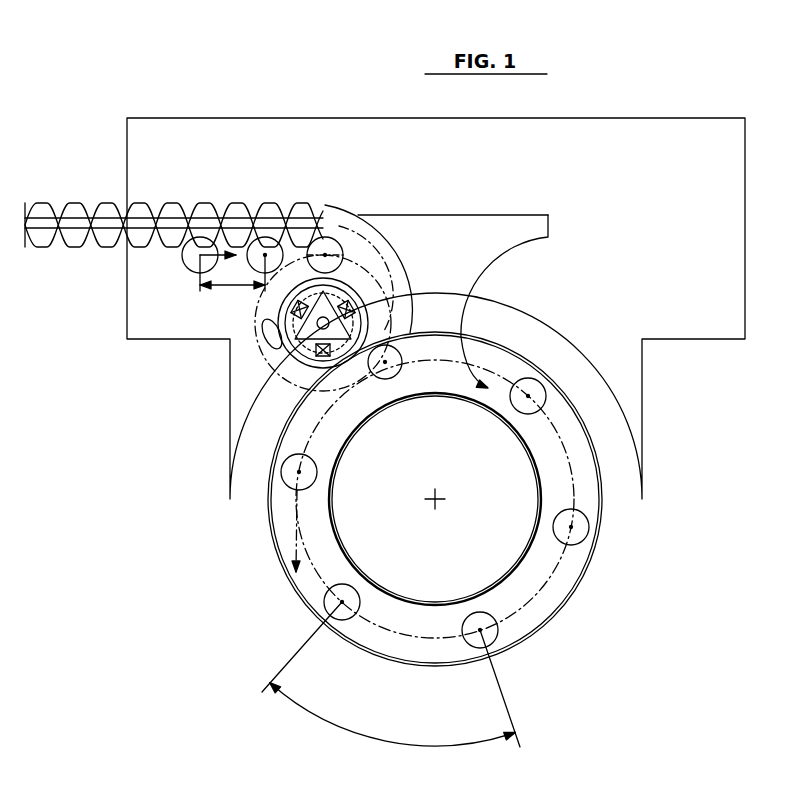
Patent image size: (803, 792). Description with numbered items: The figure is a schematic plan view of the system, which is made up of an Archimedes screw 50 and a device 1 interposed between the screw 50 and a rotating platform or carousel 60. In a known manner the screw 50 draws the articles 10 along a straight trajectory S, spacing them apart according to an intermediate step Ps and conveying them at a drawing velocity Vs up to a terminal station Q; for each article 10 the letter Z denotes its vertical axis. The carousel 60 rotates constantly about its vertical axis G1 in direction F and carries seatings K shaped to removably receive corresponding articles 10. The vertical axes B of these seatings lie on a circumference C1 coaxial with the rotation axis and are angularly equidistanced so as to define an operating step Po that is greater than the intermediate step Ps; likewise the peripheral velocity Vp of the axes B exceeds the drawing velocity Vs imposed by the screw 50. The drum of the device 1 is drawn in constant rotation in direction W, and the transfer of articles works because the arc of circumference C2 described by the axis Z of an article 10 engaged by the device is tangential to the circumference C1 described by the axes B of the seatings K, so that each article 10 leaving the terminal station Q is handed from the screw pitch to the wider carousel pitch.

The device 1 is at (252, 360).
The Archimedes screw 50 is at (249, 186).
The straight trajectory S is at (148, 254).
The axis of the article Z is at (265, 255).
The drawing velocity Vs is at (230, 250).
The intermediate step Ps is at (232, 284).
The article 10 is at (325, 255).
The arc of circumference C2 is at (363, 268).
The terminal station Q is at (347, 228).
The direction of rotation of the drum W is at (393, 233).
The carousel 60 is at (587, 411).
The circumference C1 is at (575, 480).
The vertical axes of the seatings B is at (299, 472).
The vertical axis of the carousel G1 is at (438, 497).
The direction of rotation of the carousel F is at (383, 438).
The peripheral velocity Vp is at (295, 553).
The seating K is at (578, 555).
The operating step Po is at (391, 684).